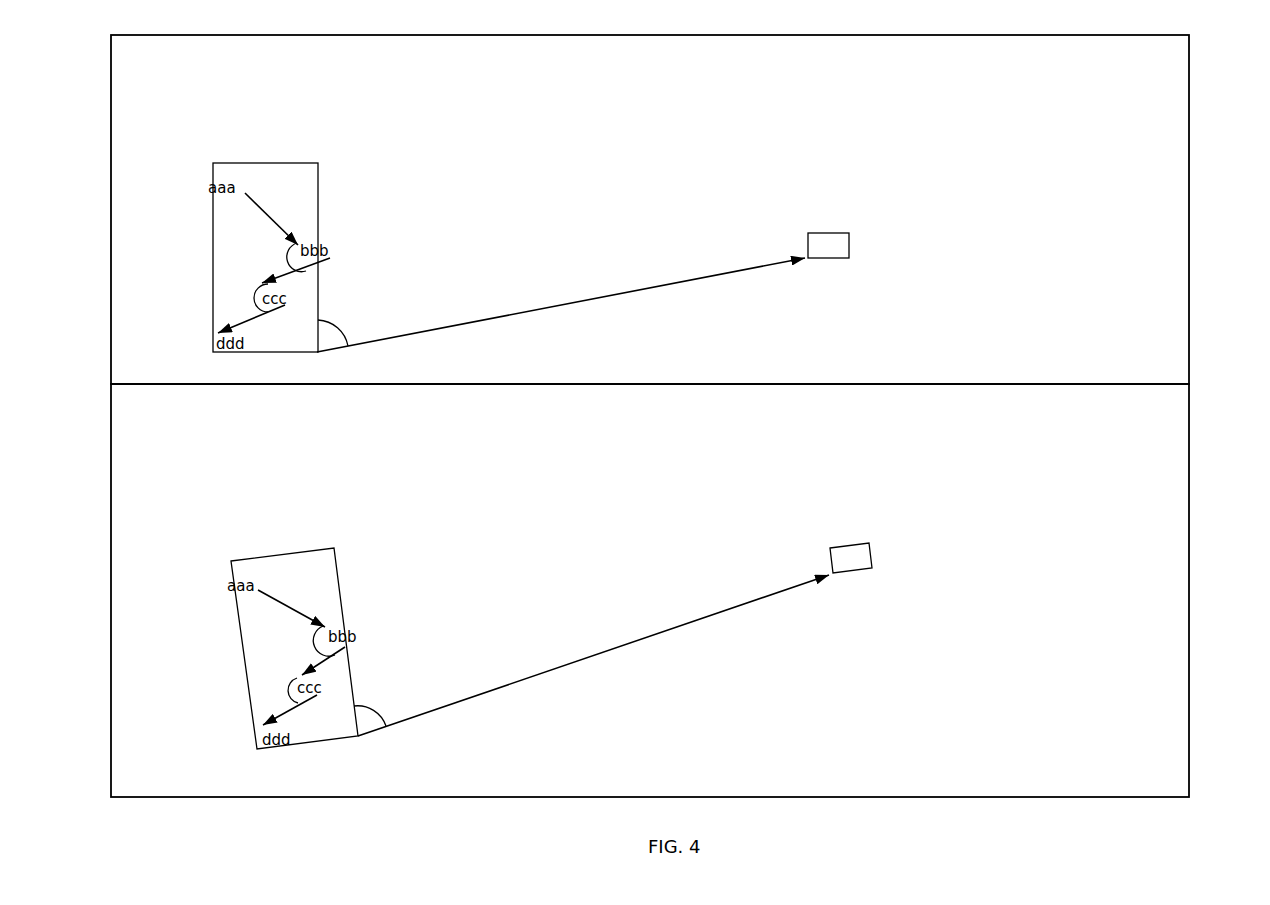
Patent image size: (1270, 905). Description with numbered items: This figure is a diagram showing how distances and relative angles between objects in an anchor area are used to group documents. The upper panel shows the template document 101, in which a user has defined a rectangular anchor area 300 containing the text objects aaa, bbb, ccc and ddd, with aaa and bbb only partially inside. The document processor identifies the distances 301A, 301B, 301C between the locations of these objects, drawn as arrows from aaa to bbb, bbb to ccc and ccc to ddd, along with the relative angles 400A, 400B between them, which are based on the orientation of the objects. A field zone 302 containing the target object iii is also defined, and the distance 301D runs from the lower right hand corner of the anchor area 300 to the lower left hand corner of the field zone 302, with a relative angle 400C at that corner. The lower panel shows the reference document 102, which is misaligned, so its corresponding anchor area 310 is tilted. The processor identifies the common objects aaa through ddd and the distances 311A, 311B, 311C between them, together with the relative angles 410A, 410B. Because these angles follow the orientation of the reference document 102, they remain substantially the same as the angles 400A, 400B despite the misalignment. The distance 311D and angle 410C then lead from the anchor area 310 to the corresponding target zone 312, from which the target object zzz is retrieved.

The template document 101 is at (1189, 122).
The reference document 102 is at (1190, 595).
The anchor area 300 is at (259, 163).
The distance 301A is at (244, 195).
The distance 301B is at (316, 278).
The distance 301C is at (252, 325).
The distance 301D is at (483, 316).
The field zone 302 is at (826, 233).
The anchor area 310 is at (270, 549).
The distance 311A is at (266, 592).
The distance 311B is at (347, 656).
The distance 311C is at (288, 718).
The distance 311D is at (516, 670).
The corresponding target zone 312 is at (845, 545).
The relative angle 400A is at (292, 263).
The relative angle 400B is at (258, 309).
The relative angle 400C is at (346, 334).
The relative angle 410A is at (322, 650).
The relative angle 410B is at (292, 701).
The relative angle 410C is at (385, 714).